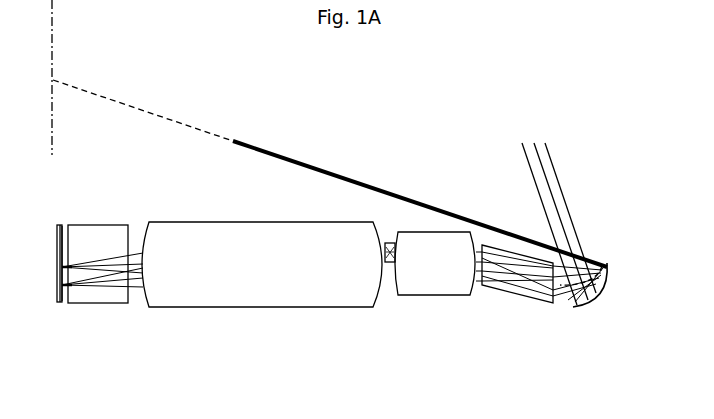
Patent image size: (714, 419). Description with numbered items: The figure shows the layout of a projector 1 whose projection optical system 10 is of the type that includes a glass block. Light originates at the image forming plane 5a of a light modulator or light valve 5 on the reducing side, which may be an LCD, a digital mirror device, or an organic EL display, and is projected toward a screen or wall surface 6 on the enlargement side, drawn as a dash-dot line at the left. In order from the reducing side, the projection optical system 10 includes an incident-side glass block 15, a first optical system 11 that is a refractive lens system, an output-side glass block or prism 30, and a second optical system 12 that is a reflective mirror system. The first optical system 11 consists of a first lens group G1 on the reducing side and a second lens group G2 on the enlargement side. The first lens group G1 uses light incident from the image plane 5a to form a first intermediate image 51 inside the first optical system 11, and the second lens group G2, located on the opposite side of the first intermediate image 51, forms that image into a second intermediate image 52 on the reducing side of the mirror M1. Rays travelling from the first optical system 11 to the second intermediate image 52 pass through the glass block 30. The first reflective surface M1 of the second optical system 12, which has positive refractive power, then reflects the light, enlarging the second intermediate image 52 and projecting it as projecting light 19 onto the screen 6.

The projector 1 is at (463, 167).
The light modulator (light valve) 5 is at (57, 242).
The image forming plane (first image forming plane) 5a is at (60, 303).
The screen (second image forming plane) 6 is at (52, 123).
The projection optical system 10 is at (193, 347).
The first optical system (refractive optical system, lens system) 11 is at (467, 351).
The second optical system (reflective optical system, mirror system) 12 is at (555, 351).
The incident-side glass block 15 is at (88, 298).
The projecting light 19 is at (565, 178).
The glass block (prism) 30 is at (518, 288).
The first intermediate image 51 is at (391, 243).
The second intermediate image 52 is at (602, 266).
The first lens group (first refractive optical system) G1 is at (265, 288).
The second lens group (second refractive optical system) G2 is at (429, 287).
The first reflective surface (mirror) M1 is at (598, 287).